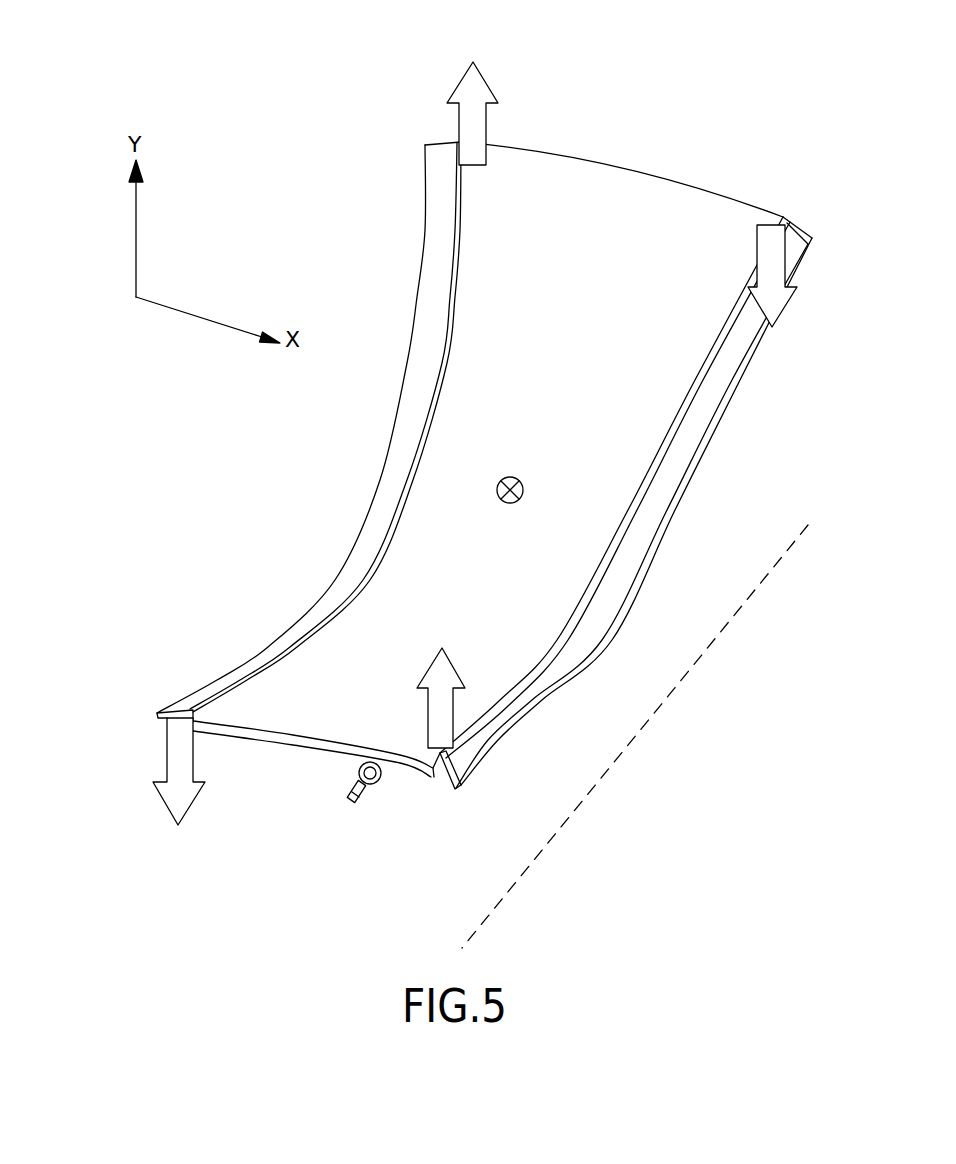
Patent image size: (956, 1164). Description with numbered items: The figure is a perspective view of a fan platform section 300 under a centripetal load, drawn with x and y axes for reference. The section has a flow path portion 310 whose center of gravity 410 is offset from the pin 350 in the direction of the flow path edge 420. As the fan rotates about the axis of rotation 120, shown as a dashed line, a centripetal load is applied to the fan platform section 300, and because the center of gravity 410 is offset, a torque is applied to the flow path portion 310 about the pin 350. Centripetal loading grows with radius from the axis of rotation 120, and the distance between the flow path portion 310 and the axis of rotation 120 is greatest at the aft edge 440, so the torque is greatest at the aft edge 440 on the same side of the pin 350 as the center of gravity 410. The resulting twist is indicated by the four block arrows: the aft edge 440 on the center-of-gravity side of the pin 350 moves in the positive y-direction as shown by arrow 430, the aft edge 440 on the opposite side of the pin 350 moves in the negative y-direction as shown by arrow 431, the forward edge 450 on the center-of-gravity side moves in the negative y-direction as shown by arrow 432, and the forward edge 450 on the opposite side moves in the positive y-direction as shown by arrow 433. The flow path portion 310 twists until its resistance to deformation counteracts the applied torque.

The fan platform section 300 is at (451, 435).
The flow path portion 310 is at (630, 203).
The flow path edge 420 is at (418, 293).
The aft edge 440 is at (587, 157).
The forward edge 450 is at (287, 743).
The center of gravity 410 is at (497, 490).
The pin 350 is at (353, 802).
The arrow 430 is at (456, 88).
The arrow 431 is at (783, 310).
The arrow 432 is at (167, 752).
The arrow 433 is at (453, 715).
The axis of rotation 120 is at (512, 887).